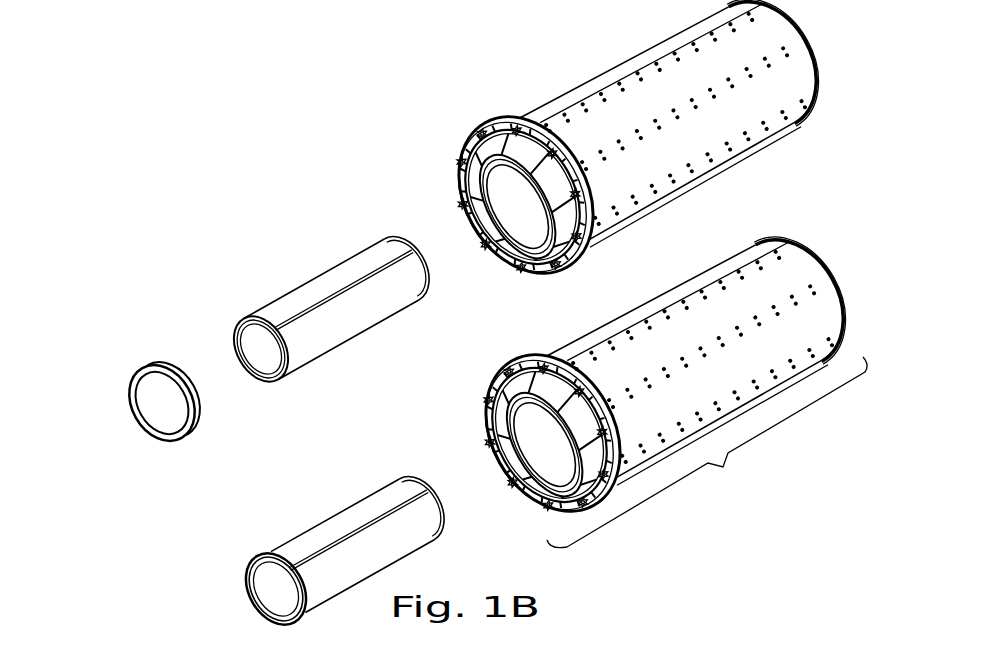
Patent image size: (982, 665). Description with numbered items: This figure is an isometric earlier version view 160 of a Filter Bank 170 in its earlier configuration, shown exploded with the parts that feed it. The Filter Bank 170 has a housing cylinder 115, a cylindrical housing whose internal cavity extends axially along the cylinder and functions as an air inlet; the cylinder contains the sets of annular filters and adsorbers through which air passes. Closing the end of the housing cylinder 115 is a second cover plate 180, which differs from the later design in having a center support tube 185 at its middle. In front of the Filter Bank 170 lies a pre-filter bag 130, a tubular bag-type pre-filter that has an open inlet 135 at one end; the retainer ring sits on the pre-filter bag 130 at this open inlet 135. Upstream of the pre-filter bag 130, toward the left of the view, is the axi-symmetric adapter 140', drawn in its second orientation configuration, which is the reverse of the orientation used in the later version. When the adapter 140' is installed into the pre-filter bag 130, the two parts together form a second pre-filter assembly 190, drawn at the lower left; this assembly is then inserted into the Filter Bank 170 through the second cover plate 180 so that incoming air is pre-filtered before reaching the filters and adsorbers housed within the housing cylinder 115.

The housing cylinder 115 is at (790, 132).
The pre-filter bag 130 is at (312, 280).
The open inlet 135 is at (263, 349).
The adapter 140' is at (150, 369).
The earlier version view 160 is at (111, 119).
The Filter Bank 170 is at (708, 381).
The second cover plate 180 is at (500, 244).
The center support tube 185 is at (497, 425).
The second pre-filter assembly 190 is at (417, 462).